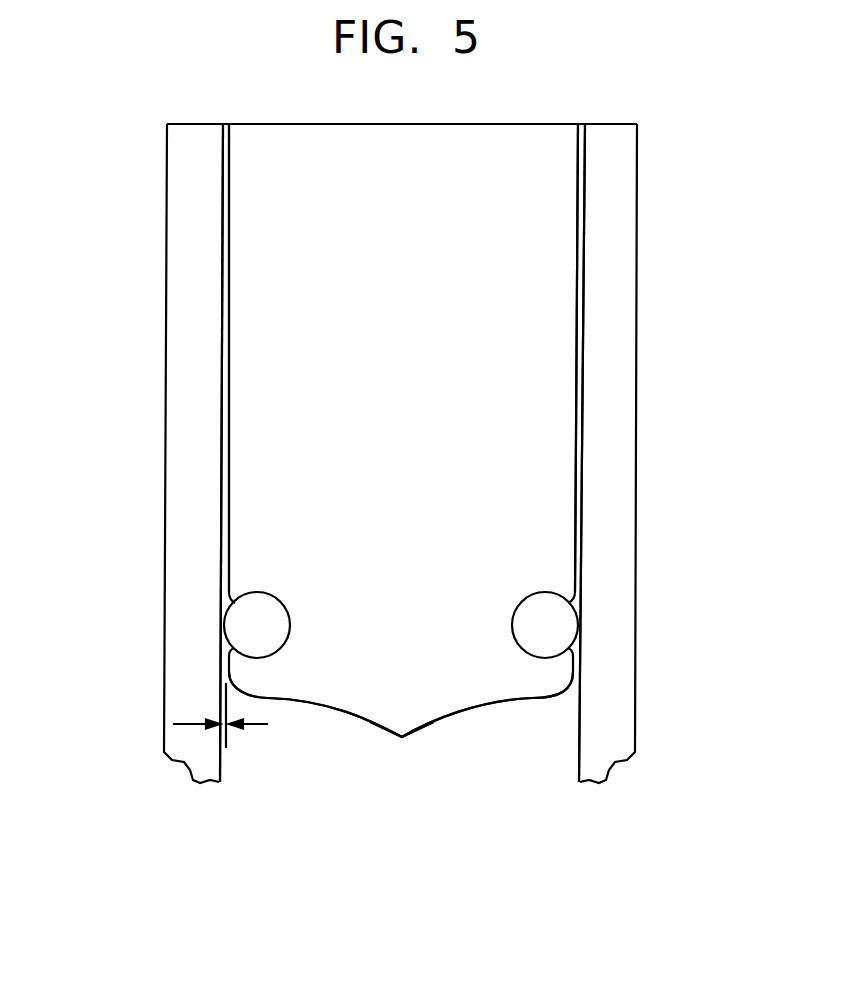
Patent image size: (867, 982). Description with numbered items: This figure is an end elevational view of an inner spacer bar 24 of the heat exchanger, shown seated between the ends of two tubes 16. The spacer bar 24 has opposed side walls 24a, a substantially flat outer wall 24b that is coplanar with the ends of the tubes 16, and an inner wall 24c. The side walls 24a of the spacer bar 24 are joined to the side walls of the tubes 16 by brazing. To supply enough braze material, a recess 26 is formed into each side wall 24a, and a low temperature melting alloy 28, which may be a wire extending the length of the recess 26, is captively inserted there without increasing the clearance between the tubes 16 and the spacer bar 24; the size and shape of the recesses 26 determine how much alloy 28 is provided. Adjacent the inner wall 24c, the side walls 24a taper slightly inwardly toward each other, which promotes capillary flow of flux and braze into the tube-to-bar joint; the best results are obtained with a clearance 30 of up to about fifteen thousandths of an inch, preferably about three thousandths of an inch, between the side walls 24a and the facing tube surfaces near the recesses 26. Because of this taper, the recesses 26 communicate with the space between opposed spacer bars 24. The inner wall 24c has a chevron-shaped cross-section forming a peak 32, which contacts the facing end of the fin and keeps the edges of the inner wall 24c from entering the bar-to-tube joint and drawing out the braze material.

The tube 16 is at (192, 133).
The spacer bar 24 is at (383, 293).
The side wall 24a is at (227, 333).
The outer wall 24b is at (347, 124).
The inner wall 24c is at (342, 712).
The recess 26 is at (270, 650).
The low temperature melting alloy 28 is at (233, 614).
The clearance 30 is at (220, 760).
The peak 32 is at (402, 737).